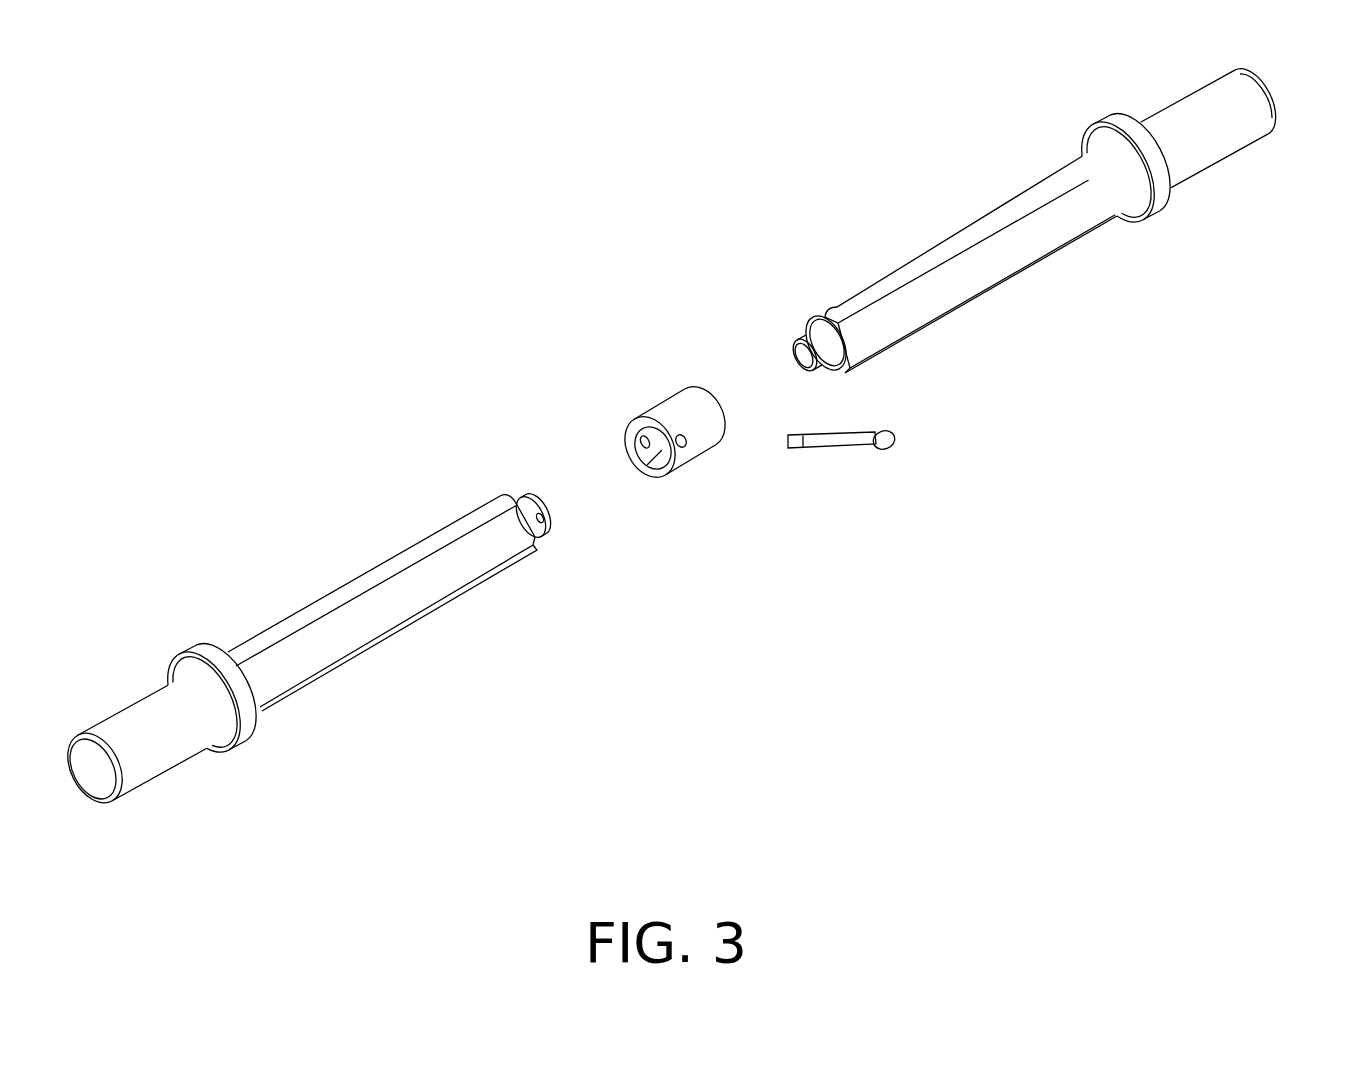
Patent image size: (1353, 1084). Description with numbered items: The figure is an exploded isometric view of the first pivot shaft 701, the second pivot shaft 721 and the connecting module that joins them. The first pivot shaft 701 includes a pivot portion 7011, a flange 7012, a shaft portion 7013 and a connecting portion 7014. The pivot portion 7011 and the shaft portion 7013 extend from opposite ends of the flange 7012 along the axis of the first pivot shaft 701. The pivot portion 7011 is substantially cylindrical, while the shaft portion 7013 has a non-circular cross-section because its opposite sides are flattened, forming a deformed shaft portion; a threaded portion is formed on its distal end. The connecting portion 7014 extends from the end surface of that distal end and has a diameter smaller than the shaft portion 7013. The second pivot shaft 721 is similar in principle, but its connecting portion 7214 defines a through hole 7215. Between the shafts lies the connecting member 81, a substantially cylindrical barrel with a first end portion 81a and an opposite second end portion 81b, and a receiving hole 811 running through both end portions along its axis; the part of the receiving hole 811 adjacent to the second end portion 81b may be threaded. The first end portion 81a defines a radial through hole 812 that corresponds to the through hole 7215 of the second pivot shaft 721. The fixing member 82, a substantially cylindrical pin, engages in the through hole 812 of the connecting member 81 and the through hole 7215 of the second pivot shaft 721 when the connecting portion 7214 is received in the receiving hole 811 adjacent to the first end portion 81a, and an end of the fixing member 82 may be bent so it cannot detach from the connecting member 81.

The first pivot shaft 701 is at (1025, 166).
The pivot portion 7011 is at (1210, 140).
The flange 7012 is at (1113, 127).
The shaft portion 7013 is at (938, 293).
The connecting portion 7014 is at (803, 333).
The second pivot shaft 721 is at (267, 591).
The connecting portion 7214 is at (523, 500).
The through hole 7215 is at (542, 523).
The connecting member 81 is at (649, 376).
The first end portion 81a is at (645, 413).
The second end portion 81b is at (698, 395).
The receiving hole 811 is at (650, 463).
The through hole 812 is at (686, 447).
The fixing member 82 is at (835, 438).